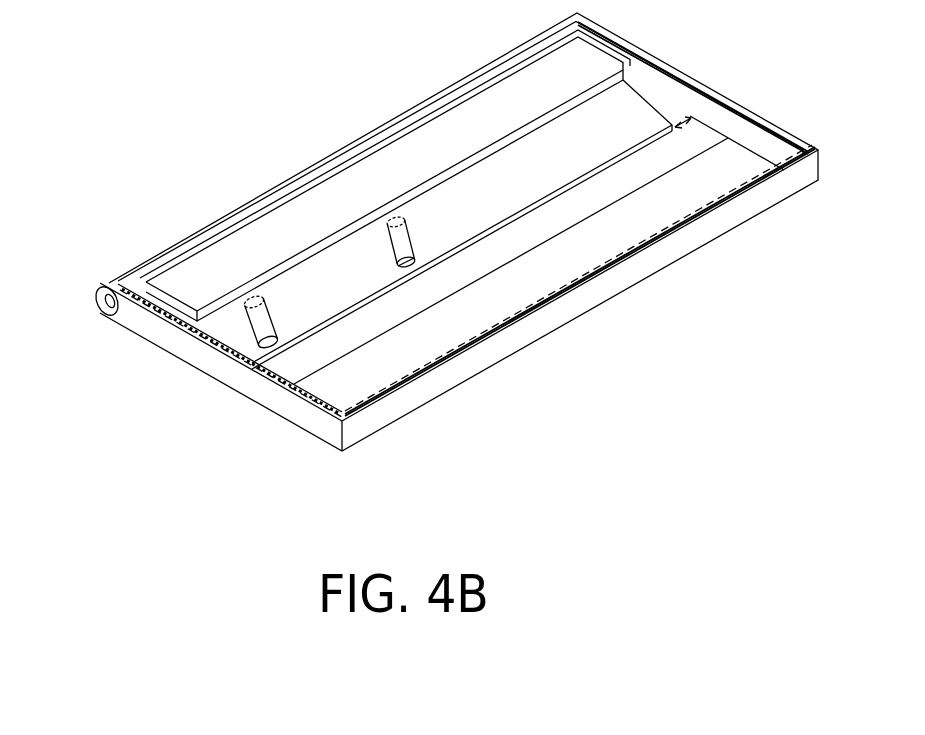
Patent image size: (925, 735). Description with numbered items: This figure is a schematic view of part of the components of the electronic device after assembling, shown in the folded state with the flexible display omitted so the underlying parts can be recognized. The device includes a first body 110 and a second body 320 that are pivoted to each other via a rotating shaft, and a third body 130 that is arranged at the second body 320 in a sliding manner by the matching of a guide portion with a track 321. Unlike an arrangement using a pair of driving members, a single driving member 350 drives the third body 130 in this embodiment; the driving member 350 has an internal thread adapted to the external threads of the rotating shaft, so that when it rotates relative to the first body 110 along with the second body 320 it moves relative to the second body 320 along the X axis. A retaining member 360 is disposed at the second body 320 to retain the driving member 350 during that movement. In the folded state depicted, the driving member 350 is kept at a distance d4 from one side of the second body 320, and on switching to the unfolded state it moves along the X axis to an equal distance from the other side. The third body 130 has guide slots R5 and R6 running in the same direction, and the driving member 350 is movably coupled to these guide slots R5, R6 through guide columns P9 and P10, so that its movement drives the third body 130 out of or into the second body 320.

The first body 110 is at (312, 424).
The third body 130 is at (594, 290).
The second body 320 is at (640, 238).
The track 321 is at (762, 153).
The driving member 350 is at (150, 318).
The retaining member 360 is at (333, 202).
The guide slot R5 is at (240, 325).
The guide slot R6 is at (417, 216).
The guide column P9 is at (247, 355).
The guide column P10 is at (410, 268).
The distance d4 is at (709, 133).